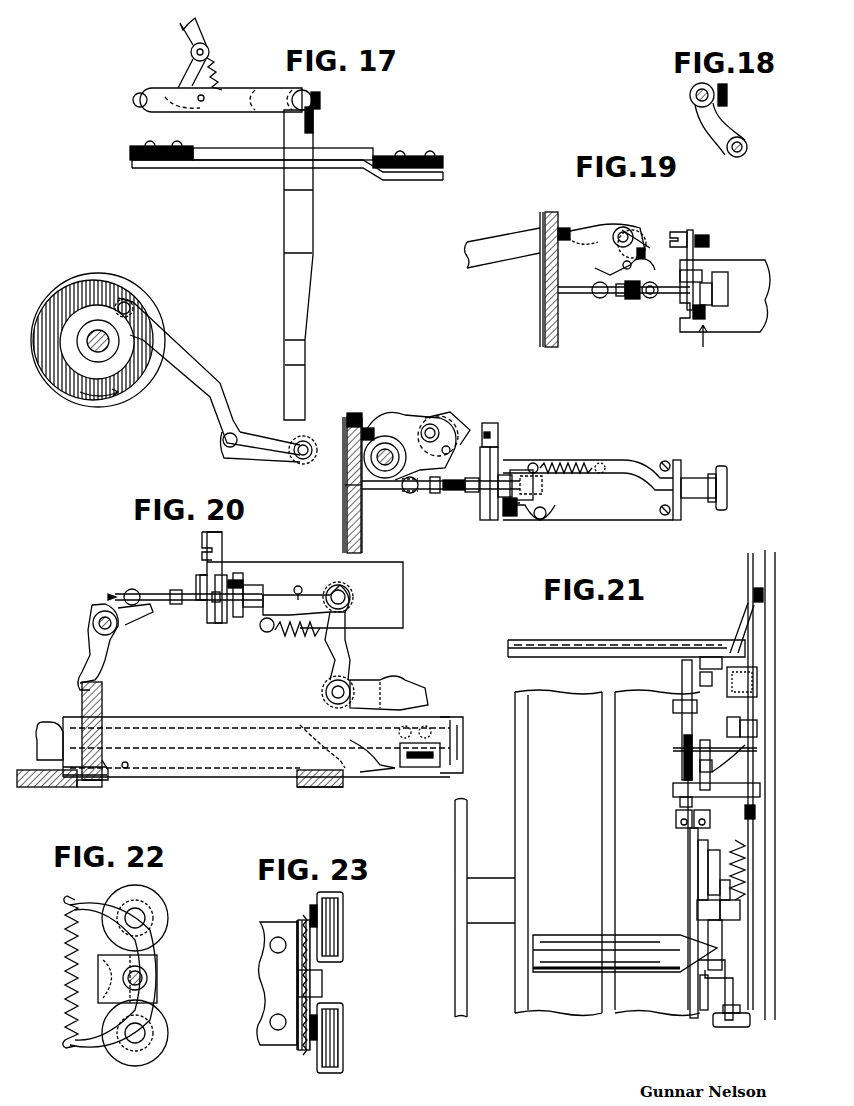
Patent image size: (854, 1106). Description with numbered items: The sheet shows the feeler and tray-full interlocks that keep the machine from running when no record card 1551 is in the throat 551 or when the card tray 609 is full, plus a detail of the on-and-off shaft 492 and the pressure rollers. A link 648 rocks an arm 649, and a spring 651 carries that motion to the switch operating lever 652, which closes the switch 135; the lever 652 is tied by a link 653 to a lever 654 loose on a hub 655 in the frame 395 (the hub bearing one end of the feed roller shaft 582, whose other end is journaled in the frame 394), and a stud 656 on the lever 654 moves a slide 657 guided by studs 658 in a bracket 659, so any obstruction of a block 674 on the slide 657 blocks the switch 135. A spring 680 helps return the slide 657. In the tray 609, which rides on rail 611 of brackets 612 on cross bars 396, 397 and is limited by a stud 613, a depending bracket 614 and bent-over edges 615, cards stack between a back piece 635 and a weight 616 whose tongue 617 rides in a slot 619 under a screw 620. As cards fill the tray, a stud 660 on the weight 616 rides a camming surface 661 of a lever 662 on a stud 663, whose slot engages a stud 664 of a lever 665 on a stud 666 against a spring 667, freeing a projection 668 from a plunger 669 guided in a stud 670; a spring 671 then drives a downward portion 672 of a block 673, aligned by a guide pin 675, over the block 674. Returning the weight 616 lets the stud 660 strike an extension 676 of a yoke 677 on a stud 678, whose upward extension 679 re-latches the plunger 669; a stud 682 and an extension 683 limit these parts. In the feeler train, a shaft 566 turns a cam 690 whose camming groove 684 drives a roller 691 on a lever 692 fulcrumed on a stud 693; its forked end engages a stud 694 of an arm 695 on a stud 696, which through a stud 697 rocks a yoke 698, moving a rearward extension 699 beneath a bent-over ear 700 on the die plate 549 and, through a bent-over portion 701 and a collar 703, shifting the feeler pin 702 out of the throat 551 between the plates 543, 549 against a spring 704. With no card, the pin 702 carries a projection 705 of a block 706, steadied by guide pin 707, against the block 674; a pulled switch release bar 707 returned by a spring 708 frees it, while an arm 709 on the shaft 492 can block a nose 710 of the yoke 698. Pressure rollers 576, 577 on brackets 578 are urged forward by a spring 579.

In FIG. 17, the switch 135 is at (378, 150).
In FIG. 21, the frame 394 is at (456, 944).
In FIG. 21, the frame 395 is at (770, 556).
In FIG. 20, the cross bar 396 is at (297, 786).
In FIG. 21, the cross bar 396 is at (460, 884).
In FIG. 20, the cross bar 397 is at (25, 788).
In FIG. 18, the shaft 492 is at (748, 150).
In FIG. 21, the shaft 492 is at (731, 822).
In FIG. 17, the guide plate 543 is at (352, 420).
In FIG. 19, the guide plate 543 is at (545, 230).
In FIG. 21, the guide plate 543 is at (547, 639).
In FIG. 17, the die plate 549 is at (362, 412).
In FIG. 19, the die plate 549 is at (548, 212).
In FIG. 21, the die plate 549 is at (555, 657).
In FIG. 17, the throat 551 is at (358, 414).
In FIG. 19, the throat 551 is at (545, 213).
In FIG. 21, the throat 551 is at (603, 639).
In FIG. 17, the shaft 566 is at (112, 344).
In FIG. 22, the pressure roller 576 is at (112, 895).
In FIG. 23, the pressure roller 576 is at (343, 912).
In FIG. 22, the pressure roller 577 is at (110, 1058).
In FIG. 23, the pressure roller 577 is at (343, 1018).
In FIG. 22, the bracket 578 is at (113, 975).
In FIG. 23, the bracket 578 is at (275, 983).
In FIG. 22, the spring 579 is at (66, 946).
In FIG. 23, the spring 579 is at (288, 925).
In FIG. 17, the shaft 582 is at (356, 497).
In FIG. 21, the shaft 582 is at (695, 668).
In FIG. 20, the tray 609 is at (345, 776).
In FIG. 21, the tray 609 is at (540, 791).
In FIG. 20, the inclined rail 611 is at (380, 770).
In FIG. 20, the bracket 612 is at (302, 725).
In FIG. 20, the stud 613 is at (130, 766).
In FIG. 20, the depending bracket 614 is at (420, 768).
In FIG. 20, the bent-over edge 615 is at (452, 718).
In FIG. 20, the weight 616 is at (102, 711).
In FIG. 21, the weight 616 is at (548, 935).
In FIG. 20, the tongue 617 is at (105, 786).
In FIG. 21, the tongue 617 is at (602, 938).
In FIG. 21, the slot 619 is at (602, 830).
In FIG. 20, the screw 620 is at (86, 788).
In FIG. 21, the screw 620 is at (595, 972).
In FIG. 20, the back piece 635 is at (48, 726).
In FIG. 17, the link 648 is at (180, 32).
In FIG. 17, the arm 649 is at (184, 86).
In FIG. 17, the spring 651 is at (223, 76).
In FIG. 17, the switch operating lever 652 is at (240, 95).
In FIG. 17, the link 653 is at (288, 206).
In FIG. 21, the link 653 is at (747, 595).
In FIG. 17, the lever 654 is at (310, 462).
In FIG. 21, the lever 654 is at (746, 614).
In FIG. 17, the hub 655 is at (352, 485).
In FIG. 17, the stud 656 is at (490, 423).
In FIG. 17, the slide 657 is at (493, 440).
In FIG. 19, the slide 657 is at (692, 232).
In FIG. 20, the slide 657 is at (205, 535).
In FIG. 21, the slide 657 is at (716, 817).
In FIG. 17, the stud 658 is at (496, 460).
In FIG. 17, the bracket 659 is at (641, 461).
In FIG. 19, the bracket 659 is at (760, 262).
In FIG. 20, the bracket 659 is at (352, 563).
In FIG. 21, the bracket 659 is at (673, 788).
In FIG. 20, the stud 660 is at (102, 687).
In FIG. 21, the stud 660 is at (708, 932).
In FIG. 20, the camming surface 661 is at (392, 680).
In FIG. 21, the camming surface 661 is at (700, 995).
In FIG. 20, the lever 662 is at (412, 698).
In FIG. 21, the lever 662 is at (700, 970).
In FIG. 20, the stud 663 is at (350, 686).
In FIG. 20, the stud 664 is at (348, 654).
In FIG. 20, the lever 665 is at (342, 615).
In FIG. 21, the lever 665 is at (708, 880).
In FIG. 20, the stud 666 is at (350, 598).
In FIG. 21, the stud 666 is at (697, 910).
In FIG. 20, the spring 667 is at (297, 632).
In FIG. 21, the spring 667 is at (720, 890).
In FIG. 20, the bent-over projection 668 is at (262, 630).
In FIG. 20, the plunger 669 is at (258, 590).
In FIG. 21, the plunger 669 is at (698, 850).
In FIG. 17, the stud 670 is at (406, 491).
In FIG. 19, the stud 670 is at (598, 283).
In FIG. 20, the stud 670 is at (130, 589).
In FIG. 21, the stud 670 is at (675, 705).
In FIG. 20, the spring 671 is at (190, 592).
In FIG. 21, the spring 671 is at (686, 765).
In FIG. 20, the downward portion 672 is at (208, 607).
In FIG. 20, the block 673 is at (237, 572).
In FIG. 21, the block 673 is at (690, 833).
In FIG. 17, the block 674 is at (500, 520).
In FIG. 19, the block 674 is at (700, 330).
In FIG. 20, the block 674 is at (216, 625).
In FIG. 21, the block 674 is at (680, 802).
In FIG. 20, the guide pin 675 is at (200, 575).
In FIG. 20, the extension 676 is at (92, 660).
In FIG. 20, the yoke 677 is at (93, 636).
In FIG. 20, the stud 678 is at (93, 621).
In FIG. 20, the upward extension 679 is at (110, 596).
In FIG. 21, the upward extension 679 is at (688, 683).
In FIG. 19, the spring 680 is at (708, 244).
In FIG. 20, the stud 682 is at (298, 586).
In FIG. 20, the extension 683 is at (132, 626).
In FIG. 17, the camming groove 684 is at (66, 290).
In FIG. 17, the cam 690 is at (100, 273).
In FIG. 17, the roller 691 is at (132, 300).
In FIG. 17, the lever 692 is at (190, 364).
In FIG. 19, the lever 692 is at (510, 256).
In FIG. 21, the lever 692 is at (740, 630).
In FIG. 17, the stud 693 is at (223, 440).
In FIG. 17, the stud 694 is at (398, 412).
In FIG. 19, the stud 694 is at (592, 228).
In FIG. 17, the arm 695 is at (418, 424).
In FIG. 19, the arm 695 is at (650, 225).
In FIG. 21, the arm 695 is at (690, 720).
In FIG. 17, the stud 696 is at (440, 424).
In FIG. 19, the stud 696 is at (630, 228).
In FIG. 21, the stud 696 is at (700, 745).
In FIG. 17, the stud 697 is at (448, 445).
In FIG. 19, the stud 697 is at (621, 263).
In FIG. 17, the yoke 698 is at (438, 430).
In FIG. 18, the yoke 698 is at (728, 91).
In FIG. 19, the yoke 698 is at (635, 240).
In FIG. 21, the yoke 698 is at (719, 767).
In FIG. 17, the rearward extension 699 is at (383, 422).
In FIG. 19, the rearward extension 699 is at (585, 226).
In FIG. 21, the rearward extension 699 is at (690, 672).
In FIG. 17, the bent-over ear 700 is at (360, 433).
In FIG. 19, the bent-over ear 700 is at (562, 228).
In FIG. 21, the bent-over ear 700 is at (700, 640).
In FIG. 17, the bent-over portion 701 is at (435, 495).
In FIG. 19, the bent-over portion 701 is at (621, 297).
In FIG. 21, the bent-over portion 701 is at (684, 735).
In FIG. 17, the feeler pin 702 is at (420, 496).
In FIG. 19, the feeler pin 702 is at (580, 293).
In FIG. 21, the feeler pin 702 is at (673, 752).
In FIG. 17, the collar 703 is at (470, 494).
In FIG. 19, the collar 703 is at (633, 300).
In FIG. 17, the spring 704 is at (450, 492).
In FIG. 19, the spring 704 is at (652, 298).
In FIG. 17, the projection 705 is at (520, 503).
In FIG. 19, the projection 705 is at (706, 312).
In FIG. 17, the block 706 is at (533, 485).
In FIG. 19, the block 706 is at (728, 286).
In FIG. 21, the block 706 is at (676, 815).
In FIG. 17, the switch release bar 707 is at (722, 466).
In FIG. 19, the switch release bar 707 is at (703, 276).
In FIG. 21, the switch release bar 707 is at (713, 1021).
In FIG. 17, the spring 708 is at (590, 467).
In FIG. 21, the spring 708 is at (735, 868).
In FIG. 18, the arm 709 is at (728, 122).
In FIG. 19, the arm 709 is at (642, 272).
In FIG. 21, the arm 709 is at (727, 767).
In FIG. 18, the nose 710 is at (725, 107).
In FIG. 19, the nose 710 is at (656, 247).
In FIG. 17, the record card 1551 is at (346, 524).